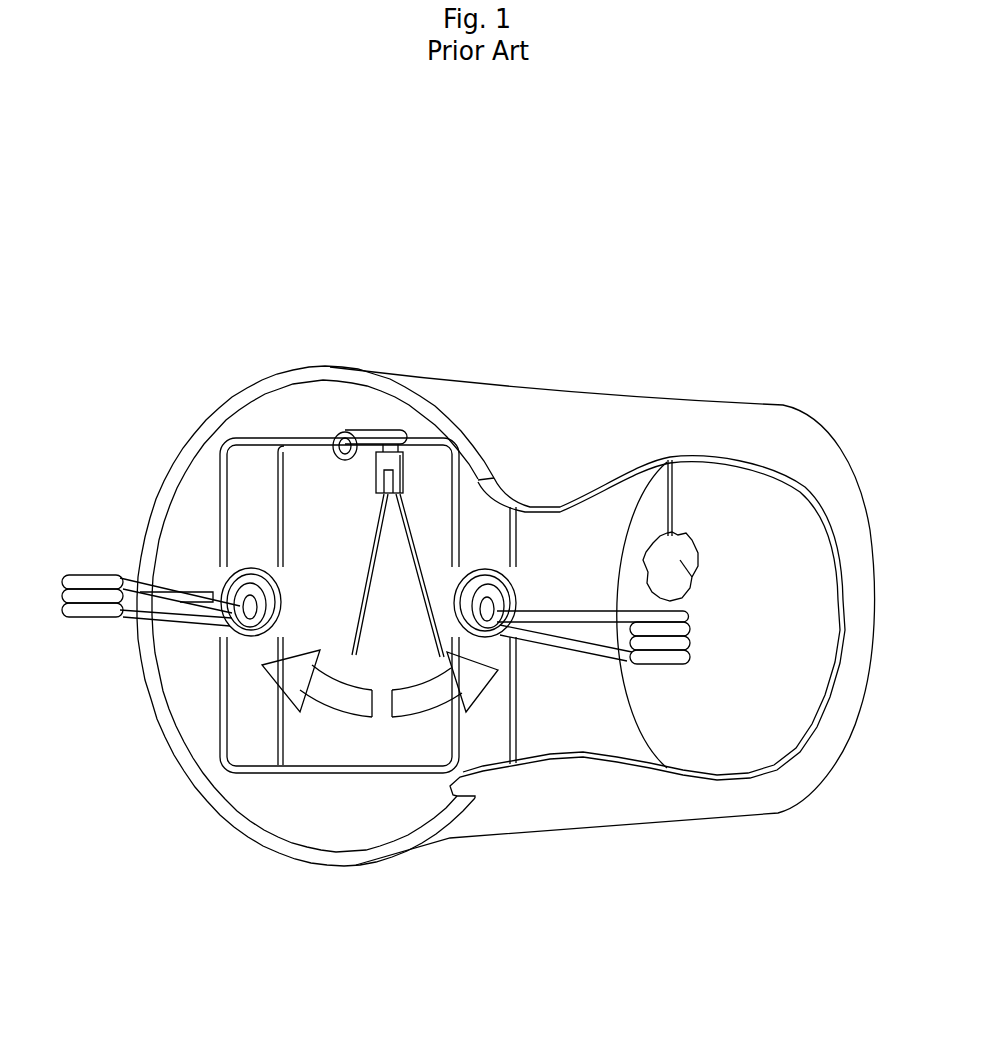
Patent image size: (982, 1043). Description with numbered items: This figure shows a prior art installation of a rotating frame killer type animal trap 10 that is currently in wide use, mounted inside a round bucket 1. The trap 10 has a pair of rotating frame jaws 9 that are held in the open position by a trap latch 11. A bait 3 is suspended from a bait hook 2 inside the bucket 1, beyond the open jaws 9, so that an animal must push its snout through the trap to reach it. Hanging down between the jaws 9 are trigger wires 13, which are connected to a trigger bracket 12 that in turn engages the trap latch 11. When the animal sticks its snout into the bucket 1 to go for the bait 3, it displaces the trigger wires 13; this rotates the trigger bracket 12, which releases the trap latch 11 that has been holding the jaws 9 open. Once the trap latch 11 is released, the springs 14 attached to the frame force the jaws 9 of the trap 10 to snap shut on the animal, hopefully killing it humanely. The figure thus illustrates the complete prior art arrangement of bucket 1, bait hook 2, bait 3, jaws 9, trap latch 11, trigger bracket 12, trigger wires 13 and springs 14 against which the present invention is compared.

The bucket 1 is at (266, 376).
The bait hook 2 is at (663, 510).
The bait 3 is at (695, 570).
The jaws 9 is at (221, 487).
The rotating frame killer type animal trap 10 is at (218, 696).
The trap latch 11 is at (352, 432).
The trigger bracket 12 is at (407, 468).
The trigger wires 13 is at (417, 563).
The springs 14 is at (97, 575).